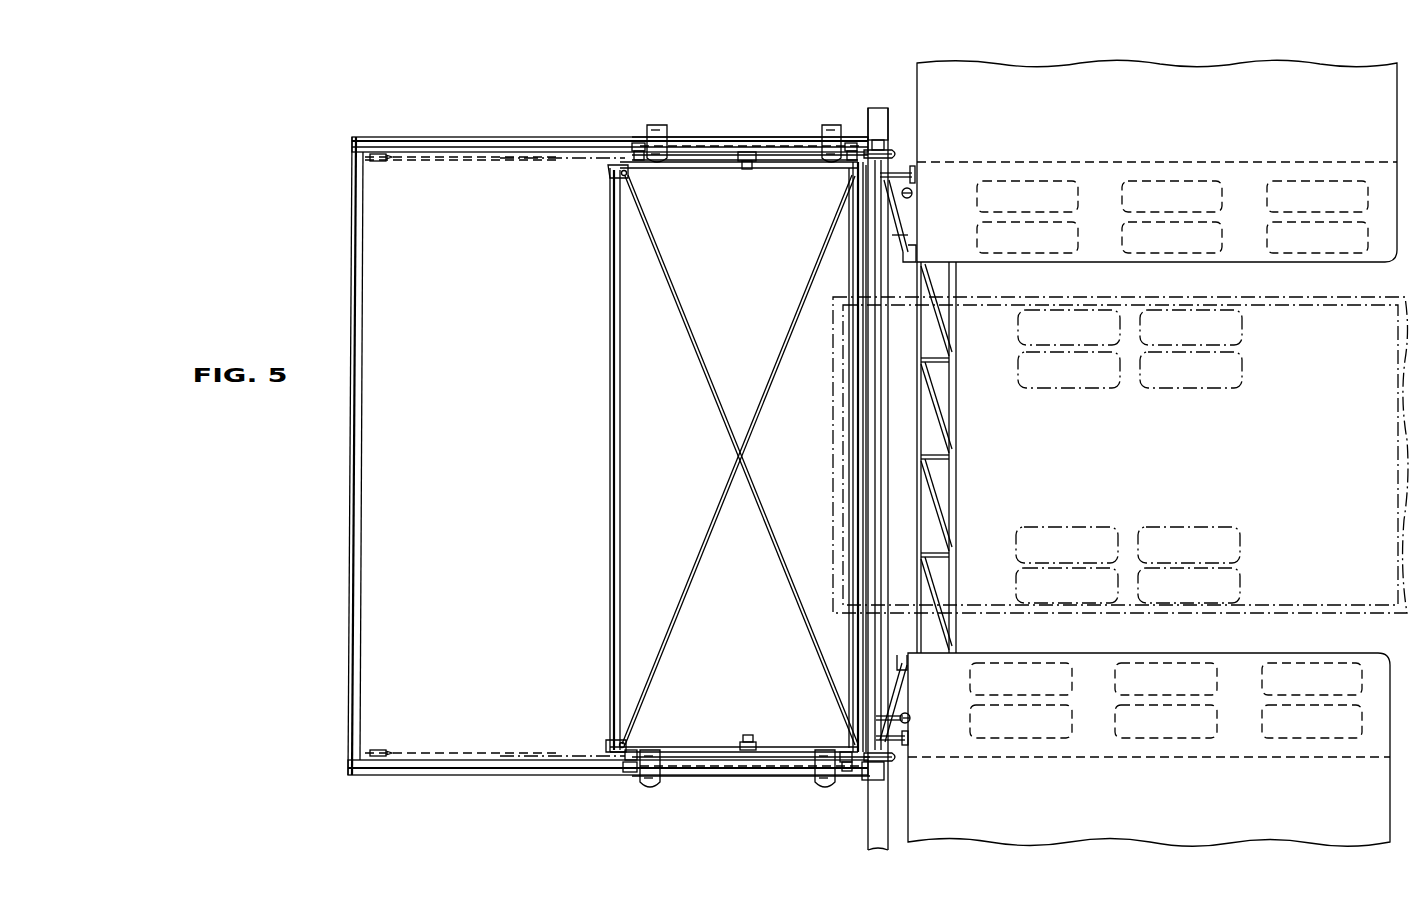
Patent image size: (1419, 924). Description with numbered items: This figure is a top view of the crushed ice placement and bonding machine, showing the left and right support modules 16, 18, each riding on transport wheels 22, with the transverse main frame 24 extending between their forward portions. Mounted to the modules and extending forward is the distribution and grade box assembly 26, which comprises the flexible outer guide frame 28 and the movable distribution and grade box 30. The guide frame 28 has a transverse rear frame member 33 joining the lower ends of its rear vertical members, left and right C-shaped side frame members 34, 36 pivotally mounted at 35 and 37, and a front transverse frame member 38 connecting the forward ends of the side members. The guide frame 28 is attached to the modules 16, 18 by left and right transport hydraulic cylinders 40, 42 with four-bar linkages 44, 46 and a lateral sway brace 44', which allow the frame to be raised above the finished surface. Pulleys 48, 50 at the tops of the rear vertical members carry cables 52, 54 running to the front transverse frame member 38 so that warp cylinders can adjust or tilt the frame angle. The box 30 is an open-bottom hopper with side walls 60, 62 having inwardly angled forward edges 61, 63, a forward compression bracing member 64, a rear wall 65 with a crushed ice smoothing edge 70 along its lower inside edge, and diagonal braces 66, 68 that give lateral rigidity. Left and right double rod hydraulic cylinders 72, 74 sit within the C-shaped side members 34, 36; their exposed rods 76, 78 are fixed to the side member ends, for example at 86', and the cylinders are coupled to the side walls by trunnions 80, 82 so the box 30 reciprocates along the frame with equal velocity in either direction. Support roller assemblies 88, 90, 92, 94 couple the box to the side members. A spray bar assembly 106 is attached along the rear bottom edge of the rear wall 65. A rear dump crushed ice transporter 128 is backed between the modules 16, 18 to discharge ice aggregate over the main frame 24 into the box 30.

The left support module 16 is at (1085, 653).
The right support module 18 is at (1108, 262).
The transport wheels 22 is at (1078, 194).
The main frame 24 is at (958, 468).
The distribution and grade box assembly 26 is at (562, 455).
The outer guide frame 28 is at (350, 136).
The distribution and grade box 30 is at (668, 457).
The transverse rear frame member 33 is at (866, 278).
The left side frame member 34 is at (449, 776).
The left pivot mounting 35 is at (884, 778).
The right side frame member 36 is at (492, 140).
The right pivot mounting 37 is at (884, 136).
The front transverse frame member 38 is at (358, 420).
The left transport hydraulic cylinder 40 is at (906, 714).
The right transport hydraulic cylinder 42 is at (912, 206).
The left four-bar linkage 44 is at (909, 734).
The left lateral sway brace 44' is at (915, 698).
The right four-bar linkage 46 is at (913, 177).
The left pulley 48 is at (895, 758).
The right pulley 50 is at (895, 154).
The left cable 52 is at (431, 750).
The right cable 54 is at (474, 162).
The left side wall 60 is at (683, 746).
The inwardly angled edge 61 is at (604, 748).
The right side wall 62 is at (697, 170).
The inwardly angled edge 63 is at (608, 170).
The forward compression box bracing member 64 is at (622, 440).
The rear wall 65 is at (860, 222).
The diagonal brace 66 is at (700, 332).
The diagonal brace 68 is at (695, 577).
The crushed ice smoothing edge 70 is at (849, 646).
The left double rod hydraulic cylinder 72 is at (725, 778).
The right double rod hydraulic cylinder 74 is at (790, 162).
The exposed rod 76 is at (517, 752).
The exposed rod 78 is at (536, 162).
The trunnion 80 is at (756, 748).
The trunnion 82 is at (767, 144).
The rod attachment point 86' is at (874, 457).
The support roller assembly 88 is at (630, 775).
The support roller assembly 90 is at (657, 786).
The support roller assembly 92 is at (636, 142).
The support roller assembly 94 is at (665, 126).
The spray bar assembly 106 is at (880, 850).
The crushed ice transporter 128 is at (1325, 308).